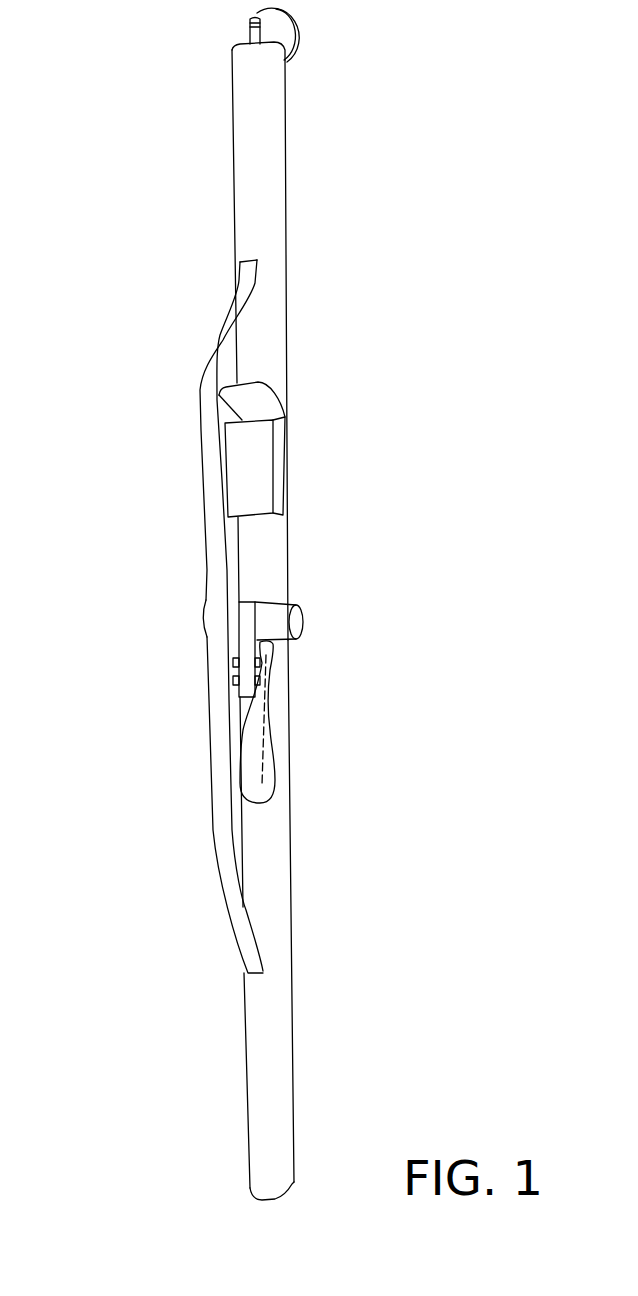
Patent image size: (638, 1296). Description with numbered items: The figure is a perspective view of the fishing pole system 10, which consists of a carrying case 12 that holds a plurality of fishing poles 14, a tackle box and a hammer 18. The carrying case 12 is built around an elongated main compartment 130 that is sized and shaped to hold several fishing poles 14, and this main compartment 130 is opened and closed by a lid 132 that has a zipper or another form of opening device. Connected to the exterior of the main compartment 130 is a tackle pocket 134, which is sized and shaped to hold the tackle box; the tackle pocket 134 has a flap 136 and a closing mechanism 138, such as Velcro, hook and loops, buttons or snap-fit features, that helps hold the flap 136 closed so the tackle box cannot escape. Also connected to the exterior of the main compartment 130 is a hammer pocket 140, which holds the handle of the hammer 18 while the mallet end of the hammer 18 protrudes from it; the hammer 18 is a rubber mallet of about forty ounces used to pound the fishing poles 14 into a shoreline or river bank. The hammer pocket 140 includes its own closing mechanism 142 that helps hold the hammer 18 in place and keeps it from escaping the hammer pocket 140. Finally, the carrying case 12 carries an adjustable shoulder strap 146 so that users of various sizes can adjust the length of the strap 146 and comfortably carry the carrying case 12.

The fishing pole system 10 is at (117, 335).
The carrying case 12 is at (245, 210).
The fishing poles 14 is at (252, 30).
The hammer 18 is at (273, 610).
The main compartment 130 is at (272, 140).
The lid 132 is at (293, 18).
The tackle pocket 134 is at (247, 470).
The flap 136 is at (248, 397).
The closing mechanism 138 is at (285, 417).
The hammer pocket 140 is at (270, 762).
The closing mechanism 142 is at (247, 670).
The adjustable shoulder strap 146 is at (220, 765).